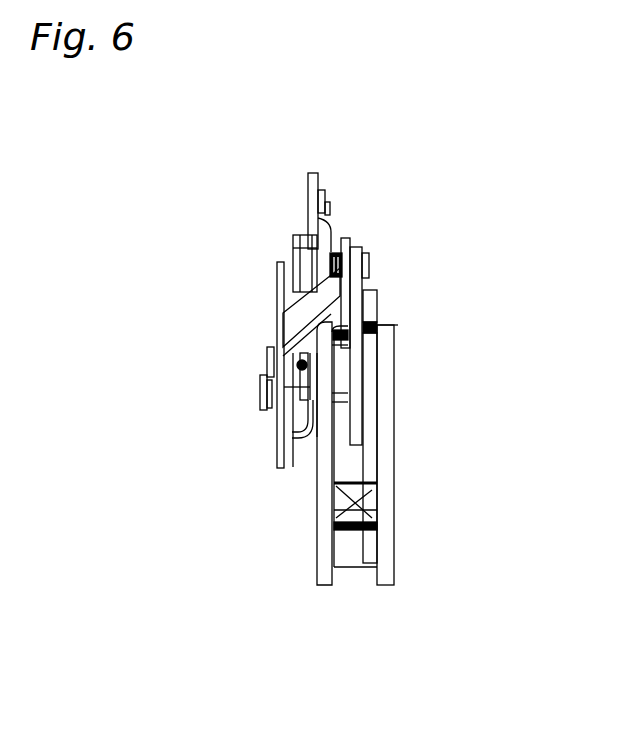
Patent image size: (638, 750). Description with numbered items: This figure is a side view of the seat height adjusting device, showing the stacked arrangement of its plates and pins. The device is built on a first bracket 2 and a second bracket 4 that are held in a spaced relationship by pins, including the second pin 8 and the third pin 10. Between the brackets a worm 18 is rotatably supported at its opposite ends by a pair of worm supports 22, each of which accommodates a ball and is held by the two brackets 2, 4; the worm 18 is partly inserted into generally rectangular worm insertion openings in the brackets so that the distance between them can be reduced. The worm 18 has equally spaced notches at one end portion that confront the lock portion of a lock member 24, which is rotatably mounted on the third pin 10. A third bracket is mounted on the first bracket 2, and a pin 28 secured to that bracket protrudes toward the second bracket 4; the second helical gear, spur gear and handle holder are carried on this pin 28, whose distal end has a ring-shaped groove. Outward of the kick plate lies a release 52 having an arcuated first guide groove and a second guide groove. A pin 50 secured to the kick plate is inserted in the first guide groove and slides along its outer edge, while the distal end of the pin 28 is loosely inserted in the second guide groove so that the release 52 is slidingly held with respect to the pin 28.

The first bracket 2 is at (385, 558).
The second bracket 4 is at (318, 553).
The second pin 8 is at (368, 458).
The third pin 10 is at (367, 372).
The worm 18 is at (365, 510).
The worm support 22 is at (350, 555).
The lock member 24 is at (366, 318).
The pin 28 is at (270, 352).
The pin 50 is at (262, 400).
The release 52 is at (290, 322).